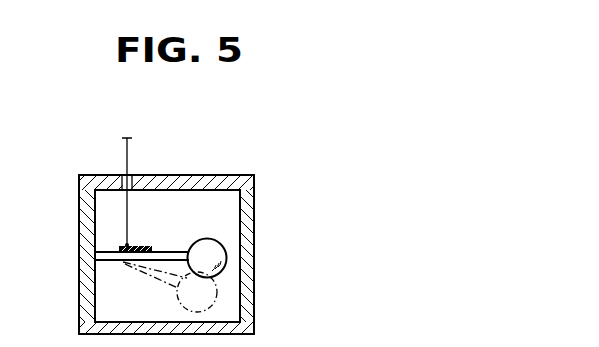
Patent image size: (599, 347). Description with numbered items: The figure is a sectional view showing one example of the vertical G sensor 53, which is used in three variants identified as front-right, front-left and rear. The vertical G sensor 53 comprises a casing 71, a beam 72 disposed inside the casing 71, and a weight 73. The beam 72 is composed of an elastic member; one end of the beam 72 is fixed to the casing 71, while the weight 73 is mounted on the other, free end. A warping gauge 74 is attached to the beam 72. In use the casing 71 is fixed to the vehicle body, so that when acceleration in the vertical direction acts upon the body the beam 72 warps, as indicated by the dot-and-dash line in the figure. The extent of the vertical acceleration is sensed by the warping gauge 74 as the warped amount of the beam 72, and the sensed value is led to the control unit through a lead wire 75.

The vertical G sensor 53 is at (241, 164).
The casing 71 is at (254, 250).
The beam 72 is at (155, 262).
The weight 73 is at (225, 264).
The warping gauge 74 is at (147, 246).
The lead wire 75 is at (127, 157).